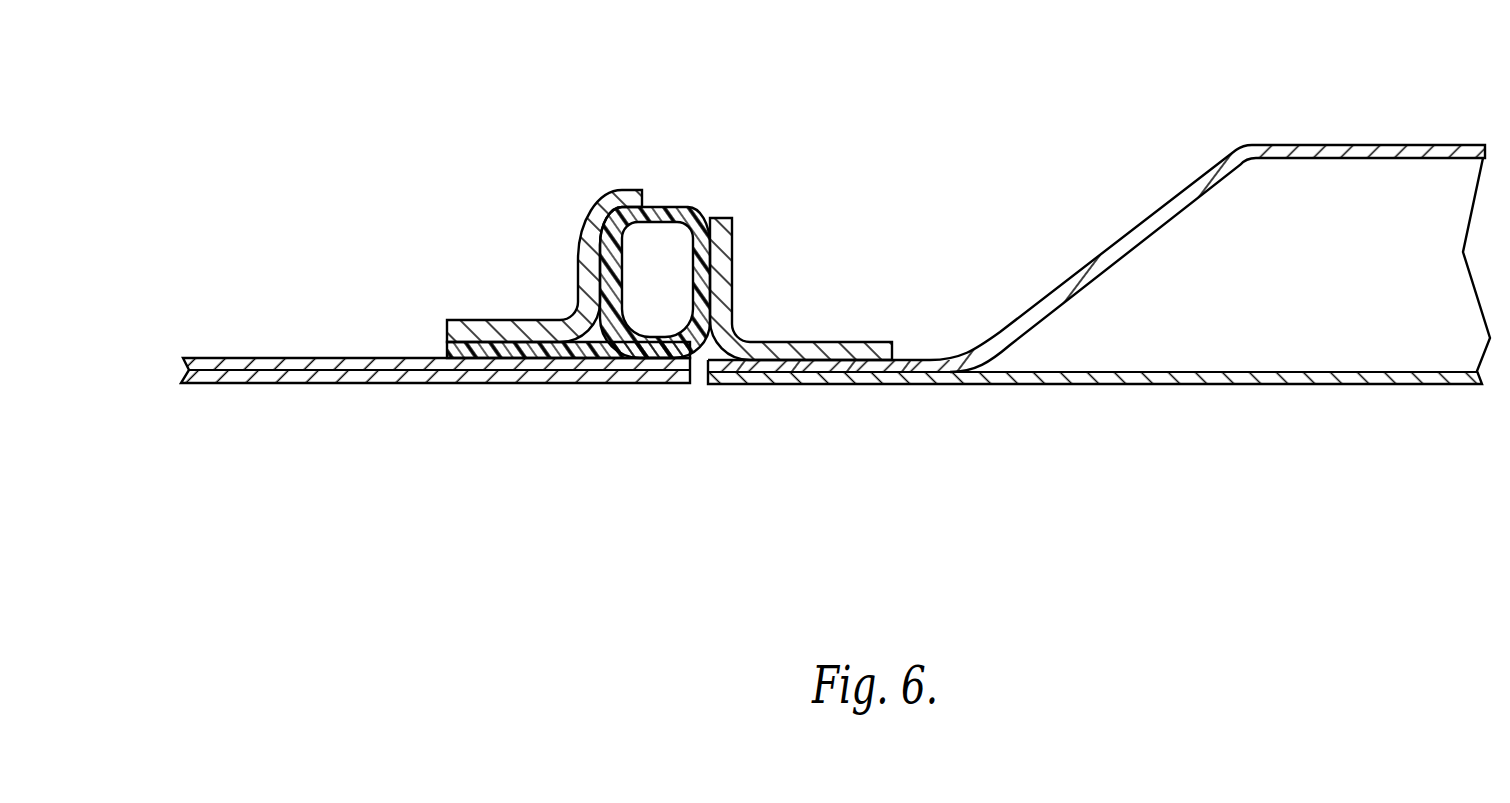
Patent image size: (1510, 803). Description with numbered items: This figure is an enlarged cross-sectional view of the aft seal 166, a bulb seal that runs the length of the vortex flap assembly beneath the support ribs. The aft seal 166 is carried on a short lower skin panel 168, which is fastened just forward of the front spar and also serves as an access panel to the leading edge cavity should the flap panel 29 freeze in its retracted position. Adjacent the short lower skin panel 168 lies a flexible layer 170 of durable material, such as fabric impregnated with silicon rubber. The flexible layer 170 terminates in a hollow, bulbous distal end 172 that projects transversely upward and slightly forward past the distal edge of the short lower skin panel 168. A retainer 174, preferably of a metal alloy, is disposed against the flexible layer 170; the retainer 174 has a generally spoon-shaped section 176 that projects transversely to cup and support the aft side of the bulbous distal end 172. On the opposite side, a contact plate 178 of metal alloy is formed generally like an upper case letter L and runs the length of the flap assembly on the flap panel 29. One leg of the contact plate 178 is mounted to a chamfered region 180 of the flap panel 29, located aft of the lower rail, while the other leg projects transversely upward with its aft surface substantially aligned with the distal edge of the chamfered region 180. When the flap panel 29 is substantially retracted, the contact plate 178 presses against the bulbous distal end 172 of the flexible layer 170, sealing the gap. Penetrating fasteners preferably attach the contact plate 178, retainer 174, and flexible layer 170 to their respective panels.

The flap panel 29 is at (1115, 385).
The aft seal 166 is at (597, 182).
The short lower skin panel 168 is at (322, 383).
The flexible layer 170 is at (431, 336).
The bulbous distal end 172 is at (680, 210).
The retainer 174 is at (466, 307).
The spoon-shaped section 176 is at (597, 218).
The contact plate 178 is at (867, 330).
The chamfered region 180 is at (907, 385).